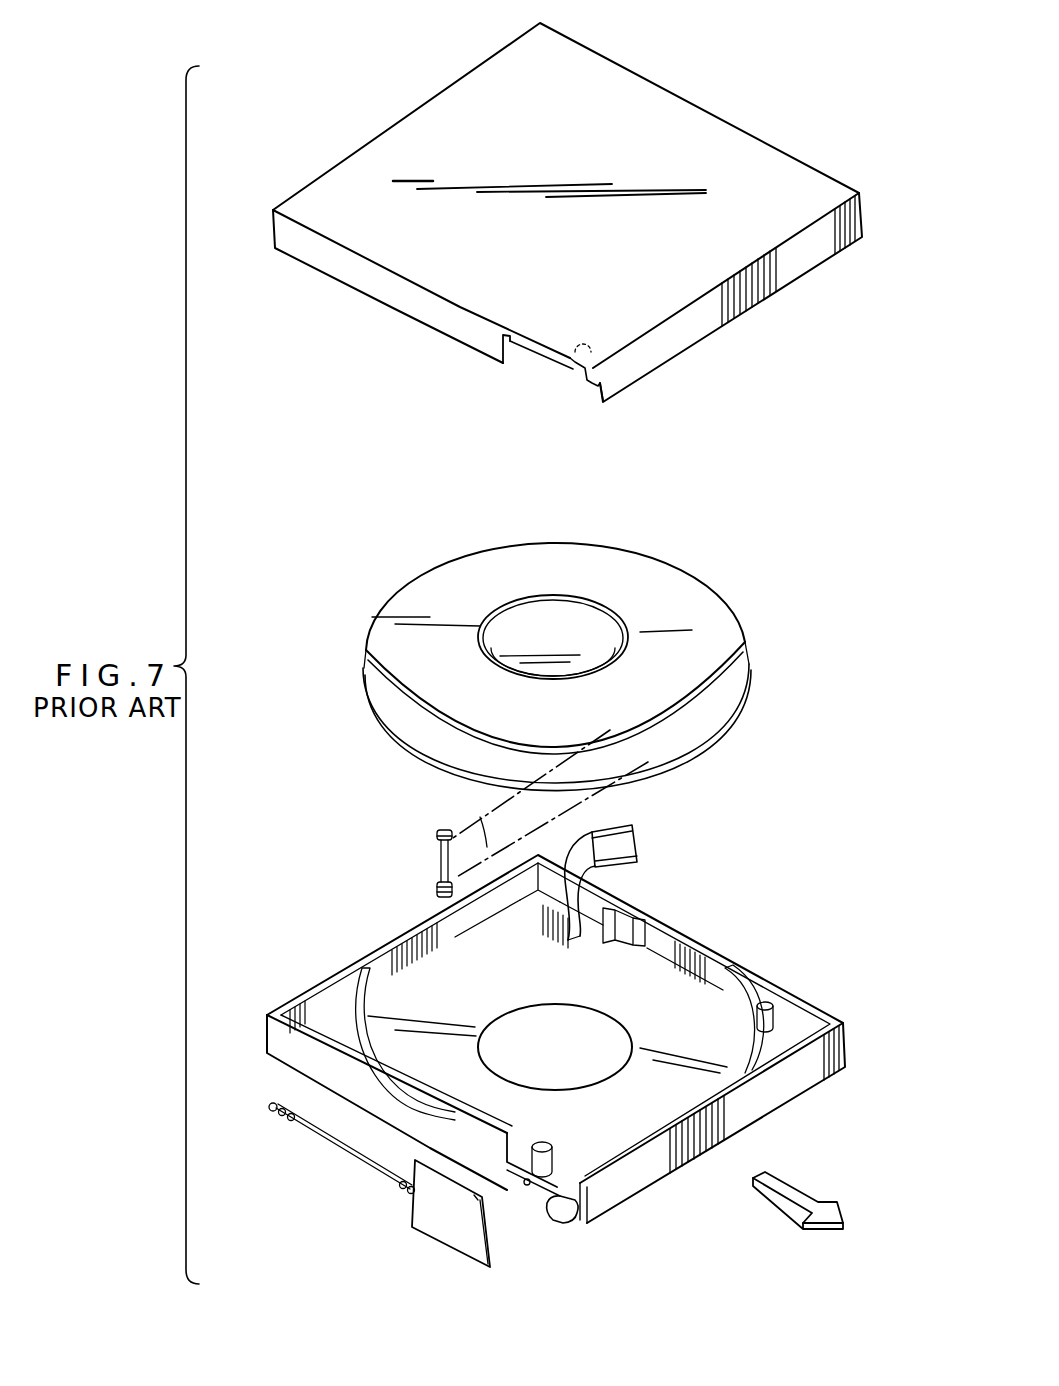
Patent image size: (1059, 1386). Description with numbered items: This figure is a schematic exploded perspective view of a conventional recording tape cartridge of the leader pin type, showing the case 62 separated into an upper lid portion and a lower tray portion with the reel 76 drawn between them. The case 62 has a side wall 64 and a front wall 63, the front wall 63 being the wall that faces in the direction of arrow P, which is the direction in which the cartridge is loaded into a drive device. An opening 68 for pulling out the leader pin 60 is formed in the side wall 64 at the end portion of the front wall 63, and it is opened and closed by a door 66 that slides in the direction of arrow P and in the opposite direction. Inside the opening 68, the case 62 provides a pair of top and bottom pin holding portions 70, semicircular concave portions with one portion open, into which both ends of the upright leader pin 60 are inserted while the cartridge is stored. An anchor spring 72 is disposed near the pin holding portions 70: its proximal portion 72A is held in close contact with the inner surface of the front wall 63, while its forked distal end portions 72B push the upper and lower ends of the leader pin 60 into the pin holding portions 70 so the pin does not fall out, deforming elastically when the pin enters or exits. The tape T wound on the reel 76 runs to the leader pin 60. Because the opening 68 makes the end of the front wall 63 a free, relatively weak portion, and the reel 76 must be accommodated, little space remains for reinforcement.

The leader pin 60 is at (432, 845).
The case 62 is at (780, 150).
The front wall 63 is at (722, 313).
The side wall 64 is at (400, 300).
The door 66 is at (452, 1225).
The opening 68 is at (520, 348).
The pin holding portions 70 is at (575, 380).
The anchor spring 72 is at (607, 878).
The proximal portion 72A is at (627, 850).
The distal end portions 72B is at (570, 937).
The reel 76 is at (713, 578).
The magnetic tape T is at (470, 837).
The insertion direction P is at (806, 1213).